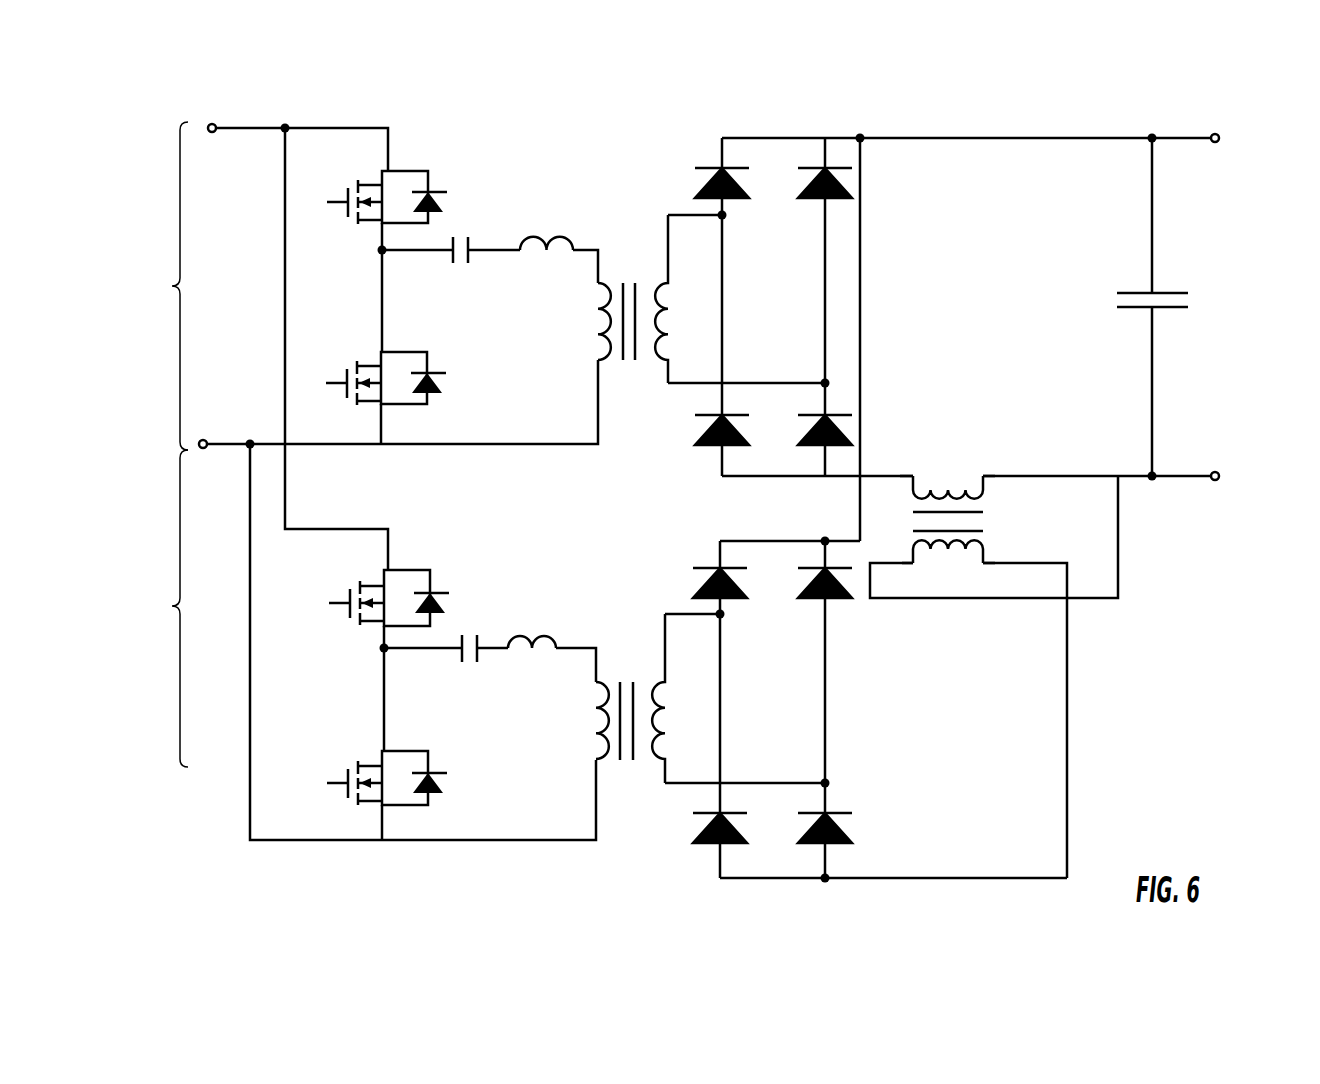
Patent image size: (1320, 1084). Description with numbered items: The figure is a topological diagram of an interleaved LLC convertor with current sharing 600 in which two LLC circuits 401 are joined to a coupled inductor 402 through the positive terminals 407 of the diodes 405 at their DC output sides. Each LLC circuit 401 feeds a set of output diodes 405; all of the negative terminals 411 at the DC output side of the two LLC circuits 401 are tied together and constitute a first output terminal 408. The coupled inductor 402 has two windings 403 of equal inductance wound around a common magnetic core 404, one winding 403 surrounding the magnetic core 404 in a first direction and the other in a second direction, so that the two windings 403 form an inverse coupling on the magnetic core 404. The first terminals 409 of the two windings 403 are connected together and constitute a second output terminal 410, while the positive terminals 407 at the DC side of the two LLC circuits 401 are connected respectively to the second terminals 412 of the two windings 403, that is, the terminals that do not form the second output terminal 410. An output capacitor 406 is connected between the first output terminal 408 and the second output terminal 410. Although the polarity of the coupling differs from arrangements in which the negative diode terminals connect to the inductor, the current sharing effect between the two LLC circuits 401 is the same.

The LLC circuit 401 is at (389, 481).
The coupled inductor 402 is at (1030, 520).
The winding 403 is at (958, 541).
The magnetic core 404 is at (975, 520).
The diode 405 is at (772, 505).
The output capacitor 406 is at (1167, 309).
The positive terminal 407 is at (728, 477).
The first output terminal 408 is at (1204, 142).
The first terminal 409 is at (906, 565).
The second output terminal 410 is at (1236, 476).
The negative terminal 411 is at (740, 137).
The second terminal 412 is at (912, 474).
The interleaved LLC convertor with current sharing 600 is at (698, 511).